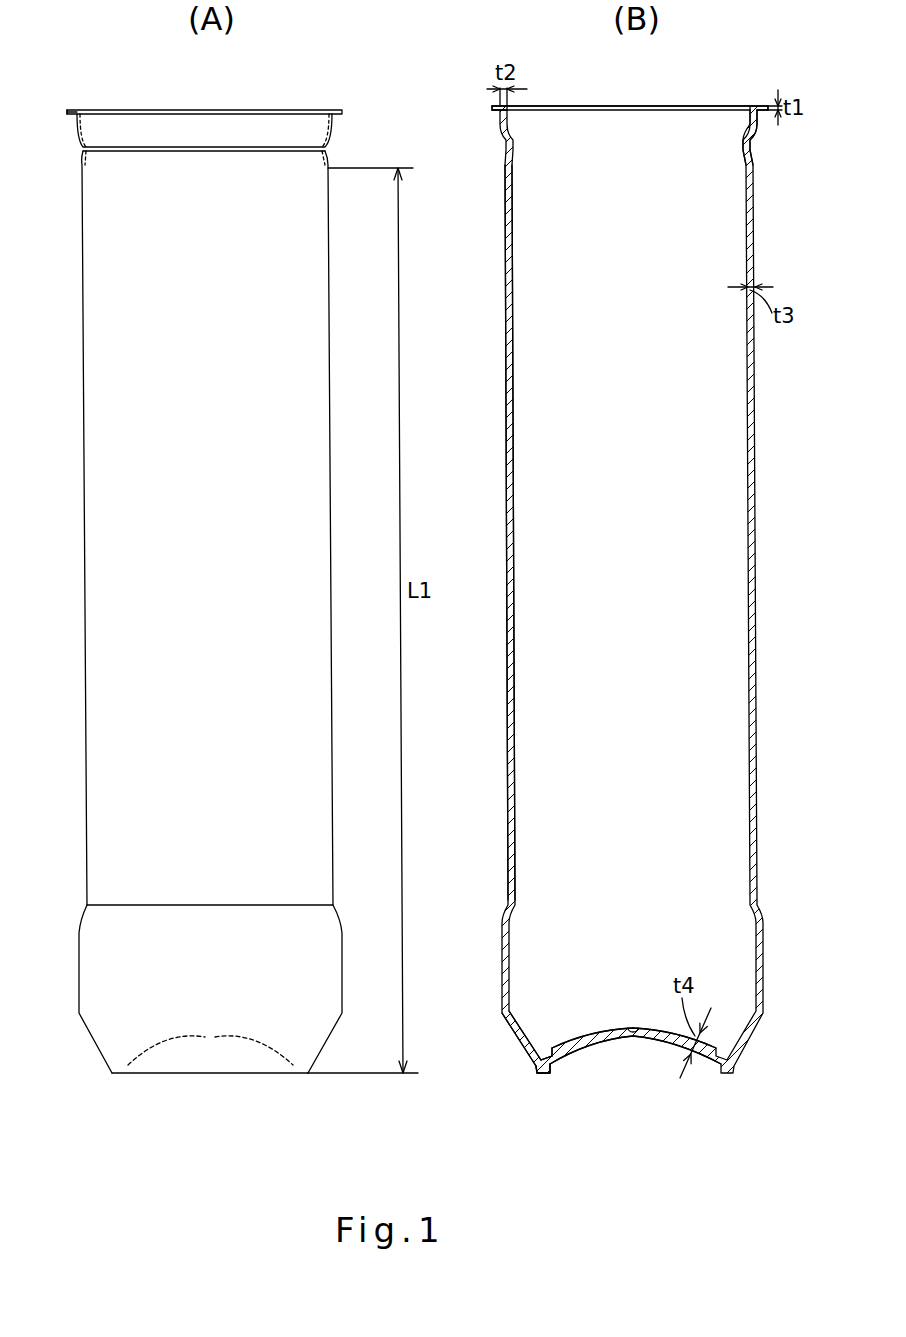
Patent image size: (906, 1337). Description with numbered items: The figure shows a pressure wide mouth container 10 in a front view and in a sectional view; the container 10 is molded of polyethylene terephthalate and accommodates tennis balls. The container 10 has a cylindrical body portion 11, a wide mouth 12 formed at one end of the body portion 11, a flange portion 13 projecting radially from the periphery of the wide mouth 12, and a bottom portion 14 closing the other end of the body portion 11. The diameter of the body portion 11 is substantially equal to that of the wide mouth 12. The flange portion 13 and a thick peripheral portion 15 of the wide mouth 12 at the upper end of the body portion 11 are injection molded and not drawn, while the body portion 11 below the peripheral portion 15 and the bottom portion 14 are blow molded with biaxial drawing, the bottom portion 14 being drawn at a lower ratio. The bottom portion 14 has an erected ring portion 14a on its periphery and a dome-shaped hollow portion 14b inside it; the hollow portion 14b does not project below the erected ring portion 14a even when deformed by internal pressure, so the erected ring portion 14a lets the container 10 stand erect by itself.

In FIG. 1A, the pressure wide mouth container 10 is at (231, 597).
In FIG. 1B, the pressure wide mouth container 10 is at (628, 597).
In FIG. 1A, the cylindrical body portion 11 is at (331, 543).
In FIG. 1B, the cylindrical body portion 11 is at (508, 680).
In FIG. 1A, the wide mouth 12 is at (208, 110).
In FIG. 1B, the wide mouth 12 is at (687, 106).
In FIG. 1A, the flange portion 13 is at (67, 110).
In FIG. 1B, the flange portion 13 is at (495, 112).
In FIG. 1A, the bottom portion 14 is at (230, 1025).
In FIG. 1B, the bottom portion 14 is at (601, 1079).
In FIG. 1A, the erected ring portion 14a is at (118, 1073).
In FIG. 1B, the erected ring portion 14a is at (545, 1074).
In FIG. 1A, the dome-shaped hollow portion 14b is at (168, 1045).
In FIG. 1B, the dome-shaped hollow portion 14b is at (583, 1047).
In FIG. 1A, the peripheral portion of the wide mouth 15 is at (328, 157).
In FIG. 1B, the peripheral portion of the wide mouth 15 is at (757, 128).